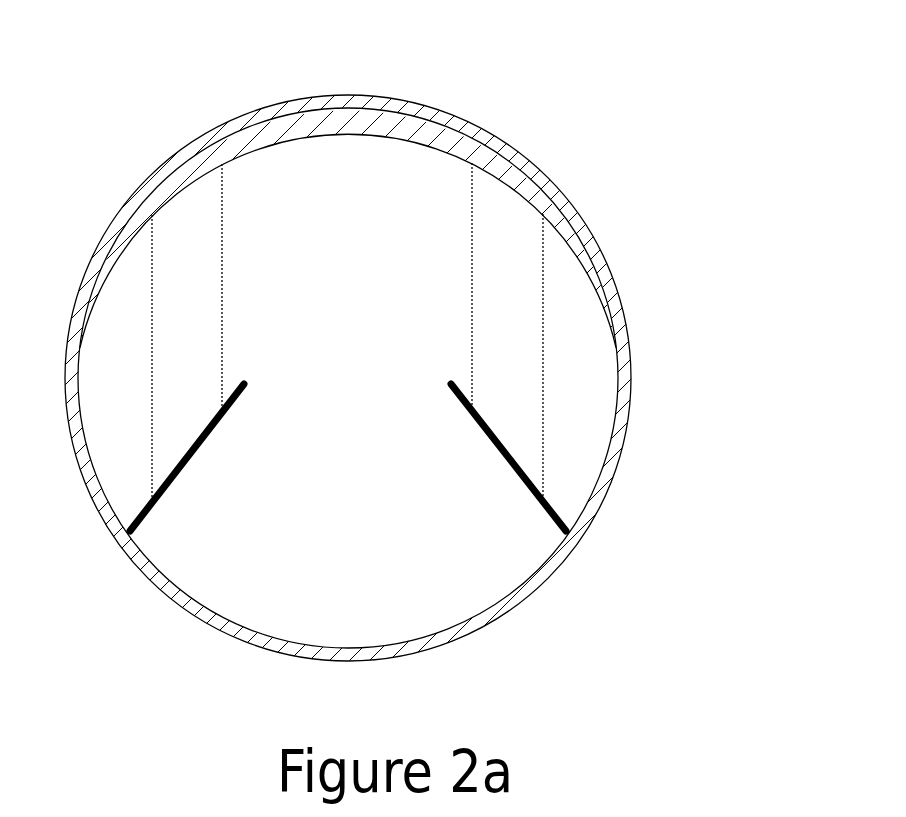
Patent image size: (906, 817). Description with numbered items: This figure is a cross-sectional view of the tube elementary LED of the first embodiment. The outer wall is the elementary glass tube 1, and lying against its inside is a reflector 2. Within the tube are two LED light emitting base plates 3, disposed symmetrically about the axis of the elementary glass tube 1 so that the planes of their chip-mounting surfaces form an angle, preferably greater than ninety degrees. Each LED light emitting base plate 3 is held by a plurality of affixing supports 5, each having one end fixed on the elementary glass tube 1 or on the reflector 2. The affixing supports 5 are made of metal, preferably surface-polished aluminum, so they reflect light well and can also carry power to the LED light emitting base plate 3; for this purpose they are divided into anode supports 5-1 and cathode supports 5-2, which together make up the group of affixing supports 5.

The elementary glass tube 1 is at (487, 104).
The reflector 2 is at (116, 221).
The LED light emitting base plate 3 is at (532, 440).
The affixing support 5 is at (453, 375).
The anode support 5-1 is at (494, 156).
The cathode support 5-2 is at (466, 331).